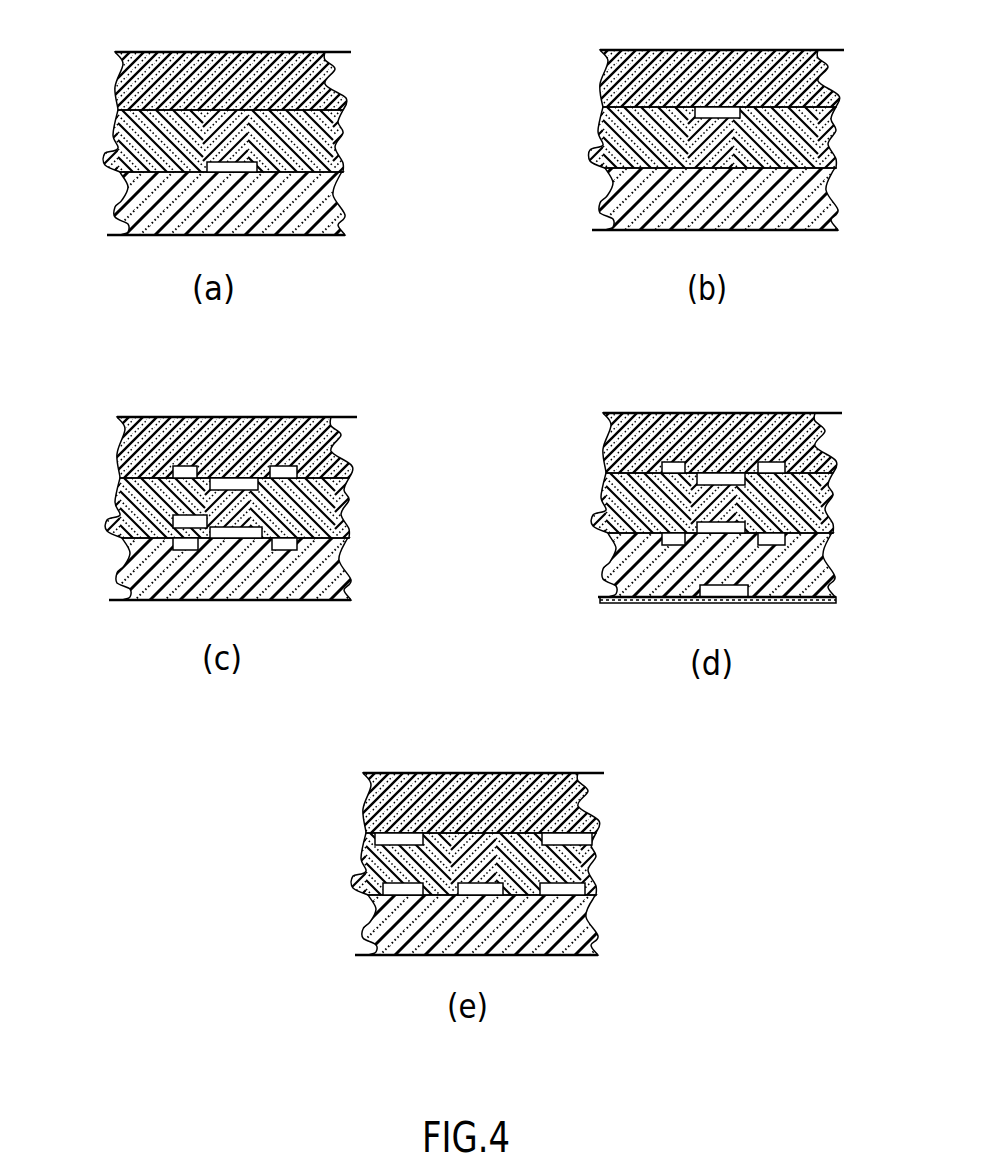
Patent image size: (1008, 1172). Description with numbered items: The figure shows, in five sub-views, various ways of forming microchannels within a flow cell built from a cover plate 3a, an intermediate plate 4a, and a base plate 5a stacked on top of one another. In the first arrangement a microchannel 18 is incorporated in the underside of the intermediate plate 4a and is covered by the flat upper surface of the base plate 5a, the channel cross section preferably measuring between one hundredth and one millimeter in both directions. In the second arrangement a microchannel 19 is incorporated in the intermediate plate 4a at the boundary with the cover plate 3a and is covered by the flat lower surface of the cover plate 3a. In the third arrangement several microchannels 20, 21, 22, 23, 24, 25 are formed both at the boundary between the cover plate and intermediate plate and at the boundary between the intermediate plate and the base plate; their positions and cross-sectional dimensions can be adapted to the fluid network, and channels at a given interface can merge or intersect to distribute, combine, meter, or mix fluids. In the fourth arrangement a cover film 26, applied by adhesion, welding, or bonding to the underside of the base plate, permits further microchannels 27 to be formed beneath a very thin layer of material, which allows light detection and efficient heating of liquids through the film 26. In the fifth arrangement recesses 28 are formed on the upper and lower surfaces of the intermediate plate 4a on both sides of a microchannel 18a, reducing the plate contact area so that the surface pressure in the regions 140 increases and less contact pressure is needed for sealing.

The cover plate 3a is at (117, 93).
The intermediate plate 4a is at (117, 158).
The base plate 5a is at (130, 200).
The microchannel 18 is at (223, 163).
The microchannel 19 is at (717, 108).
The microchannel 20 is at (183, 466).
The microchannel 21 is at (235, 478).
The microchannel 22 is at (288, 466).
The microchannel 23 is at (128, 572).
The microchannel 24 is at (128, 515).
The microchannel 25 is at (347, 563).
The cover film 26 is at (607, 603).
The microchannel 27 is at (745, 576).
The recess 28 is at (560, 842).
The region 140 is at (583, 927).
The microchannel 18a is at (457, 897).